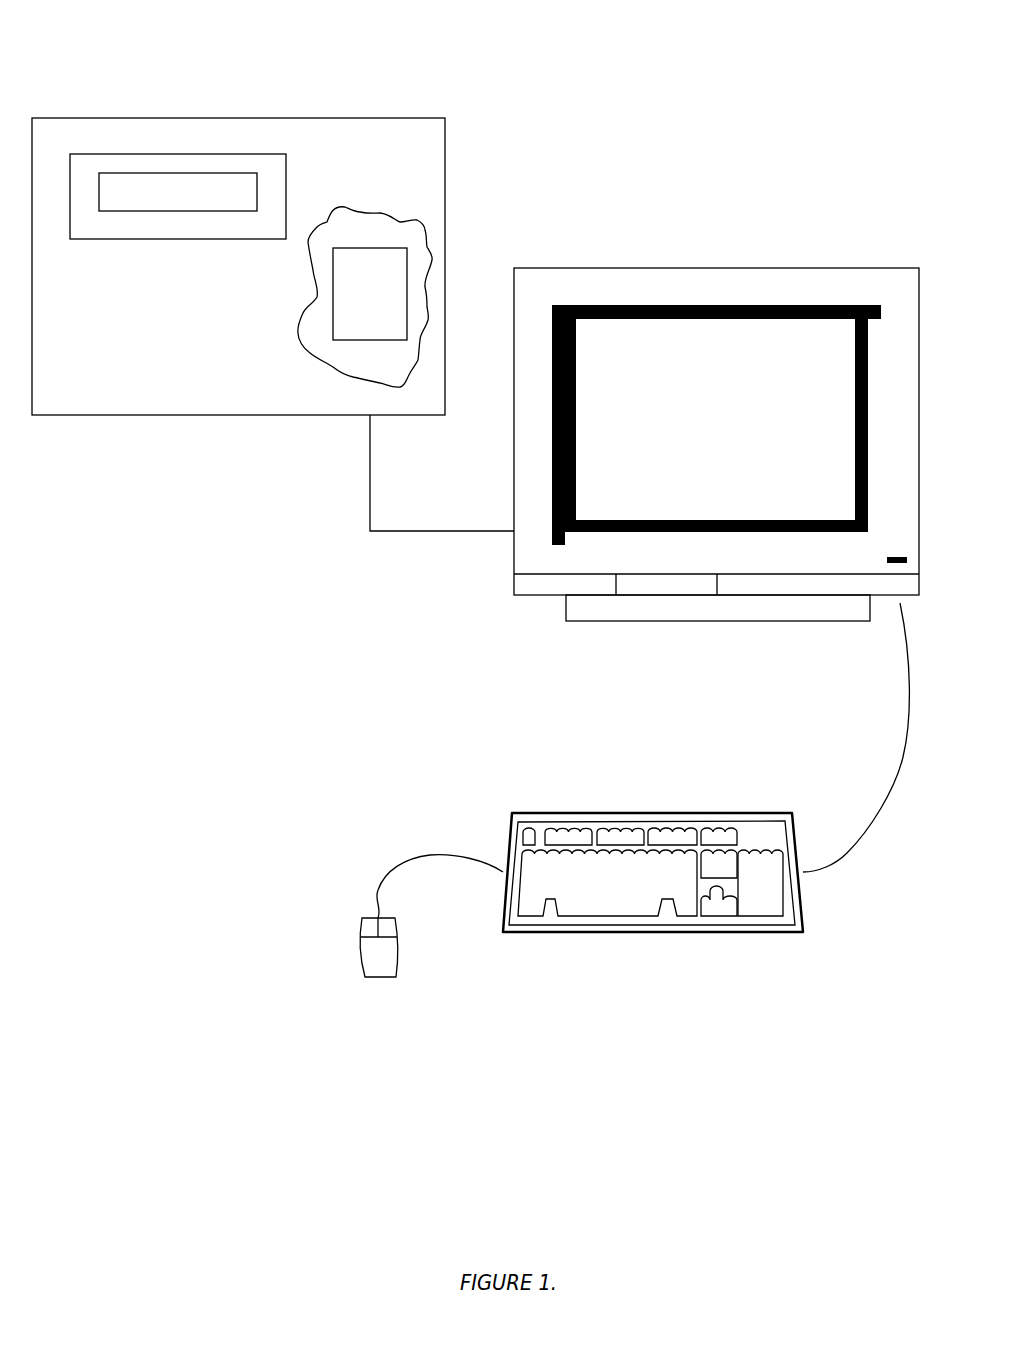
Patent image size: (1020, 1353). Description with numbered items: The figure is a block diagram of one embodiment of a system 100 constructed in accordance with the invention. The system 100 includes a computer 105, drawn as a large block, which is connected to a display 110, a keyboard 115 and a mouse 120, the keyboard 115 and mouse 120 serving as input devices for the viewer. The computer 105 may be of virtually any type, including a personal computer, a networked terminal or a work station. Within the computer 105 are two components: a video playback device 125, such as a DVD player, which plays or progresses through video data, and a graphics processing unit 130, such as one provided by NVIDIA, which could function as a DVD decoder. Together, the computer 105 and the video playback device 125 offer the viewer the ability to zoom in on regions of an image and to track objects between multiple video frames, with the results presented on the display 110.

The system 100 is at (593, 167).
The computer 105 is at (277, 117).
The display 110 is at (819, 268).
The keyboard 115 is at (687, 923).
The mouse 120 is at (378, 980).
The video playback device 125 is at (131, 172).
The graphics processing unit (GPU) 130 is at (379, 293).